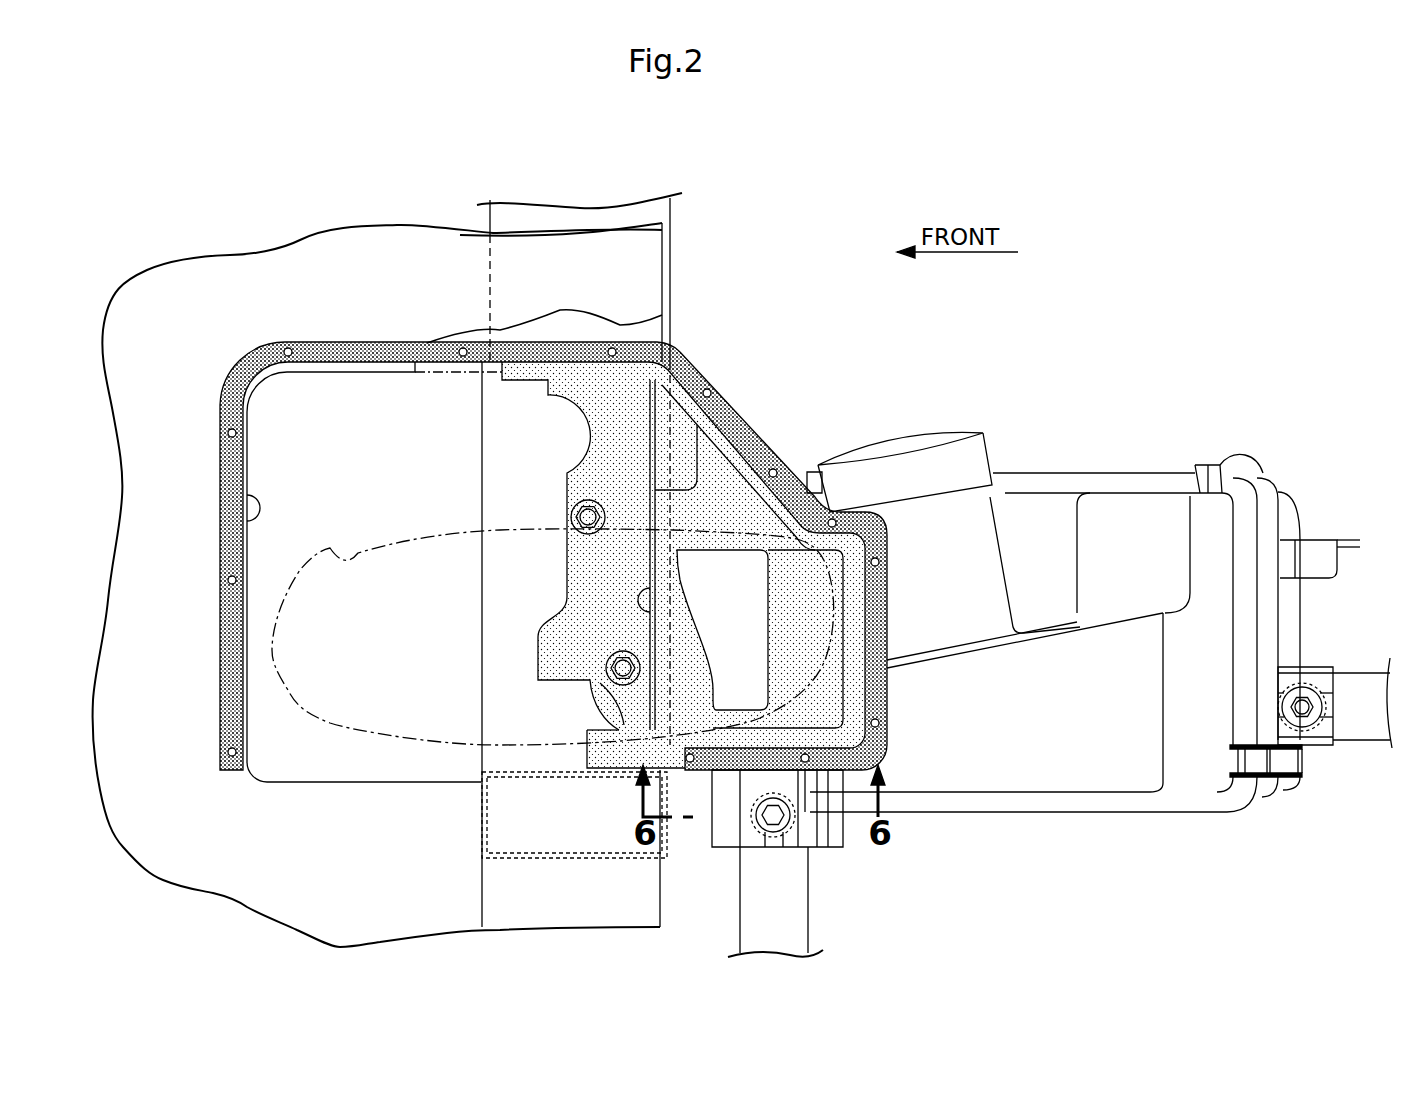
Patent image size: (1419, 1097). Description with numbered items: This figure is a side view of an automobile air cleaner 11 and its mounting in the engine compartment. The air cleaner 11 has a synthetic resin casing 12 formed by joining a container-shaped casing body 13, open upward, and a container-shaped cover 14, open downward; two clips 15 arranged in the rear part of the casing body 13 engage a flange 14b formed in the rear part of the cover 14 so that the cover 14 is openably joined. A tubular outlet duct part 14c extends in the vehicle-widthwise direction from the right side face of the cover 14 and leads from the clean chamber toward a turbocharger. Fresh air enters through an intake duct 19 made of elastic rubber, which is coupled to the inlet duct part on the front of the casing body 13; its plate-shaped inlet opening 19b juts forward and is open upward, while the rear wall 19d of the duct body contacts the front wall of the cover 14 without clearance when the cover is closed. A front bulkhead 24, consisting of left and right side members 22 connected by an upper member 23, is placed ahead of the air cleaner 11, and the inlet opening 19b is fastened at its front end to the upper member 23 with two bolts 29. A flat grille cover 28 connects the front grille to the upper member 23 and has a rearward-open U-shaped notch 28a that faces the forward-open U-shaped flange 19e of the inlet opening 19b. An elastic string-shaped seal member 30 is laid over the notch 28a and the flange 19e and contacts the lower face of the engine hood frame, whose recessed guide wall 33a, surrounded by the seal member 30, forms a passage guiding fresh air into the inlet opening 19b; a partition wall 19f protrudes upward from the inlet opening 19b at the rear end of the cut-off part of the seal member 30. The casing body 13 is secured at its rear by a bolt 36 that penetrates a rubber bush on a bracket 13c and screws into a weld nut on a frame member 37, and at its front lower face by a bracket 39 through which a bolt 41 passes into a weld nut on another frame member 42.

The air cleaner 11 is at (1093, 387).
The casing 12 is at (1048, 445).
The casing body 13 is at (1305, 497).
The bracket 13c is at (1317, 670).
The cover 14 is at (1148, 470).
The flange 14b is at (1248, 627).
The outlet duct part 14c is at (917, 468).
The clip 15 is at (1197, 463).
The intake duct 19 is at (693, 565).
The inlet opening 19b is at (713, 477).
The rear wall 19d is at (808, 660).
The U-shaped flange 19e is at (747, 473).
The partition wall 19f is at (642, 600).
The side member 22 is at (533, 853).
The upper member 23 is at (672, 250).
The front bulkhead 24 is at (452, 715).
The grille cover 28 is at (183, 253).
The U-shaped notch 28a is at (262, 514).
The bolt 29 is at (572, 512).
The seal member 30 is at (362, 345).
The guide wall 33a is at (362, 556).
The bolt 36 is at (1283, 703).
The frame member 37 is at (1370, 733).
The bracket 39 is at (718, 850).
The bolt 41 is at (774, 818).
The frame member 42 is at (800, 913).